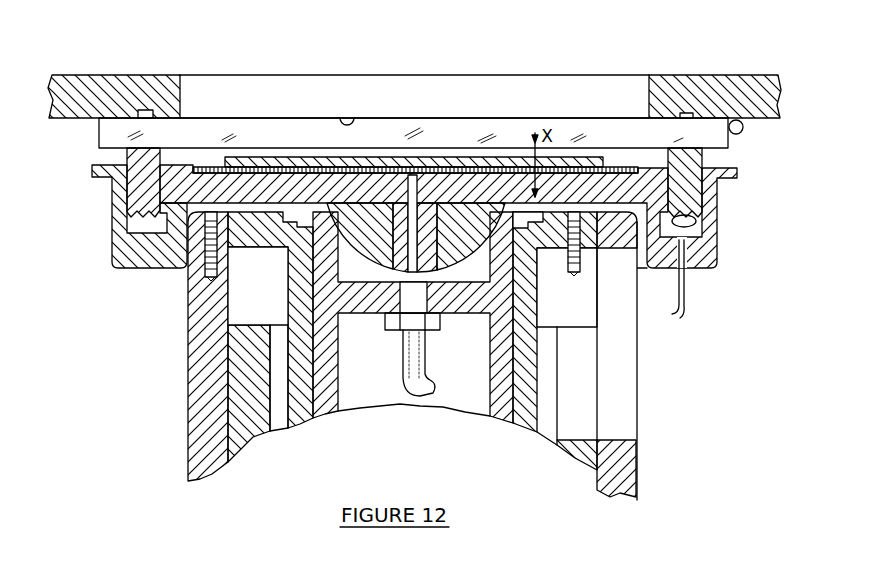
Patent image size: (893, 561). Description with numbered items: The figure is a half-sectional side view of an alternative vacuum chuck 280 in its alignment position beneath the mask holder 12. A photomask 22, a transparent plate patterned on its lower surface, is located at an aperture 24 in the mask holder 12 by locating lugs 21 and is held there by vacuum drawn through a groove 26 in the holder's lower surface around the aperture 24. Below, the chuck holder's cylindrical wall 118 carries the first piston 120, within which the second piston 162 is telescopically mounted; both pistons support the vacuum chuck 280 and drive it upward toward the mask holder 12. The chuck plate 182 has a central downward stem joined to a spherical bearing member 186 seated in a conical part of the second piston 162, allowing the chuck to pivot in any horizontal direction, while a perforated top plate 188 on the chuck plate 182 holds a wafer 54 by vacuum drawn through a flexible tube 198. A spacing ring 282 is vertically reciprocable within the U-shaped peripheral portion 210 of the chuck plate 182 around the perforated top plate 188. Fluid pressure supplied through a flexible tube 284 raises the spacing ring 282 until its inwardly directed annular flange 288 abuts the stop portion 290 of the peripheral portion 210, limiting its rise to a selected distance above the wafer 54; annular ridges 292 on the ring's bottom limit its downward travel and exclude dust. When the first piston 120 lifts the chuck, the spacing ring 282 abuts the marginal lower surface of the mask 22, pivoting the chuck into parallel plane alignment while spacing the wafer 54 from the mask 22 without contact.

The mask holder 12 is at (106, 75).
The aperture 24 is at (641, 75).
The photomask 22 is at (503, 130).
The locating lugs 21 is at (354, 127).
The groove 26 is at (688, 112).
The wafer 54 is at (289, 157).
The stop portion 290 is at (166, 157).
The vacuum chuck 280 is at (642, 182).
The spacing ring 282 is at (125, 194).
The annular flange 288 is at (175, 197).
The annular ridges 292 is at (696, 219).
The flexible tube 284 is at (686, 316).
The peripheral portion 210 is at (106, 256).
The first piston 120 is at (185, 362).
The cylindrical wall 118 is at (251, 438).
The second piston 162 is at (340, 366).
The bearing member 186 is at (386, 209).
The chuck plate 182 is at (484, 222).
The perforated top plate 188 is at (557, 169).
The flexible tube 198 is at (428, 358).